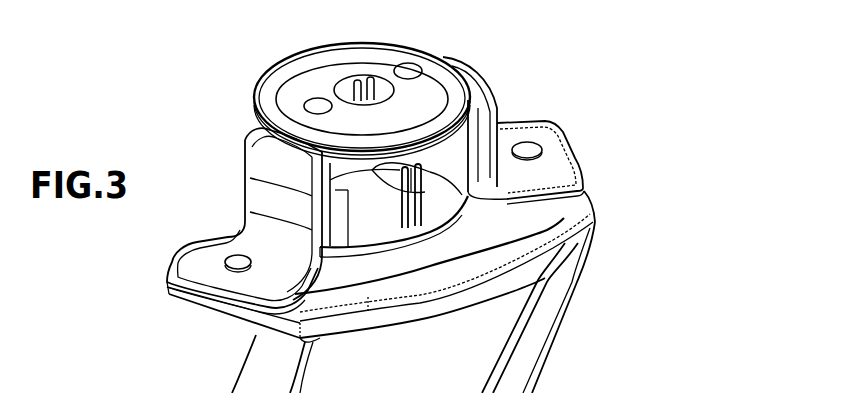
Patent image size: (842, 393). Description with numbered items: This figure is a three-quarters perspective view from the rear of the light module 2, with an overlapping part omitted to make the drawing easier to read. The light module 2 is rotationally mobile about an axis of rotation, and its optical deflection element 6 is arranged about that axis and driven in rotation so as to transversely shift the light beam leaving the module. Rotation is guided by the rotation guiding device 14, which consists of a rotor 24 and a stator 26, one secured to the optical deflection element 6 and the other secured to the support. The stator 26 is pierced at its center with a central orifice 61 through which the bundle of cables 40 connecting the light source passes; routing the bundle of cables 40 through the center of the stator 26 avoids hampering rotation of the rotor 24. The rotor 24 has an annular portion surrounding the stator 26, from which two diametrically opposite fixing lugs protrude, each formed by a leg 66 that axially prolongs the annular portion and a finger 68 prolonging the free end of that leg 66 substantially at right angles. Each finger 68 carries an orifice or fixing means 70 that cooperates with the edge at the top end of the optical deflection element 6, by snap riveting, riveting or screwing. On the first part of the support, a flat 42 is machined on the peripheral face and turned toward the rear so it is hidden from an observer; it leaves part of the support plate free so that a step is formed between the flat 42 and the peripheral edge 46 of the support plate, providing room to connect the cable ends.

The light module 2 is at (244, 104).
The optical deflection element 6 is at (382, 360).
The rotation guiding device 14 is at (498, 13).
The rotor 24 is at (446, 54).
The stator 26 is at (414, 100).
The bundle of cables 40 is at (404, 210).
The flat 42 is at (443, 190).
The peripheral edge of the support plate 46 is at (444, 236).
The central orifice 61 is at (380, 87).
The leg 66 is at (489, 115).
The finger 68 is at (203, 251).
The fixing means 70 is at (238, 253).